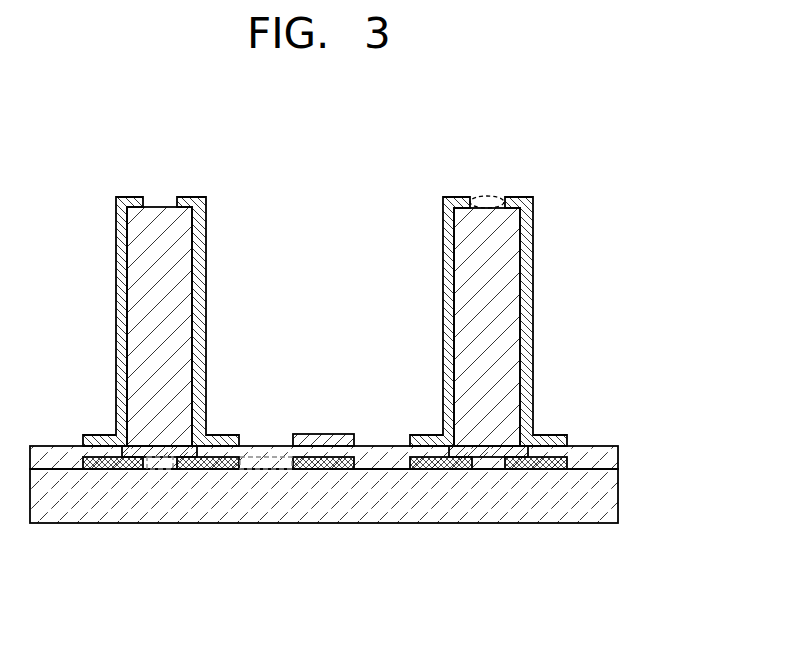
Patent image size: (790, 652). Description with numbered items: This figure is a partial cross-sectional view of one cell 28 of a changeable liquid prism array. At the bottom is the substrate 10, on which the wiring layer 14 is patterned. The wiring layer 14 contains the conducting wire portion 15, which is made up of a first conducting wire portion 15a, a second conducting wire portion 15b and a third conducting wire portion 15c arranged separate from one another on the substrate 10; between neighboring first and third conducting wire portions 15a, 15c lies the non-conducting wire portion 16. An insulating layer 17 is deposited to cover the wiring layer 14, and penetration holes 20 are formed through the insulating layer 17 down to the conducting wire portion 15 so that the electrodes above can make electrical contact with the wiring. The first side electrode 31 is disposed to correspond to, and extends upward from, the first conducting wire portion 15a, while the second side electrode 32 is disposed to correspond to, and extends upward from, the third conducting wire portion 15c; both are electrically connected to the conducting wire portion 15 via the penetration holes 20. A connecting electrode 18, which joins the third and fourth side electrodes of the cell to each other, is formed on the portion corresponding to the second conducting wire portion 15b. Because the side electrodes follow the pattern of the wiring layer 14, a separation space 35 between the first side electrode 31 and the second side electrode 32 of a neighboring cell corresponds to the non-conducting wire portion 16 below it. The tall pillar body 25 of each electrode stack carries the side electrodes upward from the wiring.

The substrate 10 is at (618, 505).
The insulating layer 17 is at (618, 461).
The connecting electrode 18 is at (321, 434).
The wiring layer 14 is at (365, 501).
The conducting wire portion 15 is at (325, 537).
The first conducting wire portion 15a is at (117, 469).
The second conducting wire portion 15b is at (330, 469).
The third conducting wire portion 15c is at (207, 469).
The non-conducting wire portion 16 is at (158, 469).
The penetration hole 20 is at (568, 458).
The cell 28 is at (395, 269).
The first side electrode 31 is at (131, 197).
The second side electrode 32 is at (197, 197).
The pillar core 25 is at (513, 289).
The separation space 35 is at (490, 196).